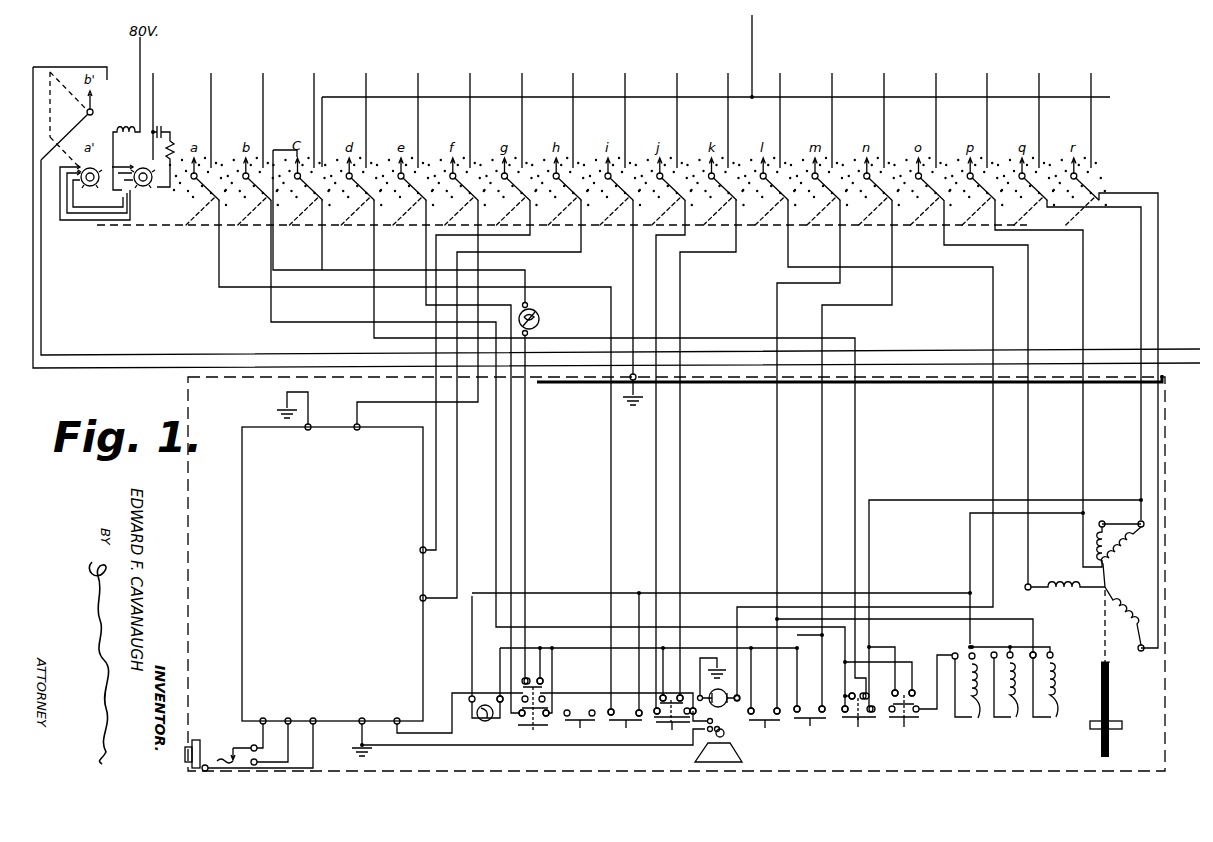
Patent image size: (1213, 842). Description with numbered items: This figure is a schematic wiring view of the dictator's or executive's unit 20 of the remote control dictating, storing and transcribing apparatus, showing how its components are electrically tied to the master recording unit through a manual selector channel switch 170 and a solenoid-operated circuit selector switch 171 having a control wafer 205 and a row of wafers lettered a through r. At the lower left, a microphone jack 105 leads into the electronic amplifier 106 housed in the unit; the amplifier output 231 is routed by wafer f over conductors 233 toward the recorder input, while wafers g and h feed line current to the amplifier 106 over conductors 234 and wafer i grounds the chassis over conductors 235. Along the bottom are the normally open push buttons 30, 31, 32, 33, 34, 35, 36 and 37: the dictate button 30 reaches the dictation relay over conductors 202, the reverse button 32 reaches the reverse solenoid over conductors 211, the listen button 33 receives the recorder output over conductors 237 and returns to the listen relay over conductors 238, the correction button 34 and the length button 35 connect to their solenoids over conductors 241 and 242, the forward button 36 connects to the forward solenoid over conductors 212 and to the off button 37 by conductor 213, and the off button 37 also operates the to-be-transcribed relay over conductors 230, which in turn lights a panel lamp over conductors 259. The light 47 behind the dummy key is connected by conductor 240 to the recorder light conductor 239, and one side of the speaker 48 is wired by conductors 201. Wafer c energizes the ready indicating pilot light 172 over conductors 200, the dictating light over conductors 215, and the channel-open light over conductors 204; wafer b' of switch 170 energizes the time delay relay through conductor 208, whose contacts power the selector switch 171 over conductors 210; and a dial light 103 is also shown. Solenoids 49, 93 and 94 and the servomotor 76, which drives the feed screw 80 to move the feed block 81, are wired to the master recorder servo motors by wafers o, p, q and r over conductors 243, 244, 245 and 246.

The dictator's unit 20 is at (182, 415).
The dictate button 30 is at (533, 711).
The switch-closing push button 31 is at (579, 726).
The reverse button 32 is at (625, 727).
The listen button 33 is at (675, 720).
The correction button 34 is at (764, 726).
The length button 35 is at (810, 724).
The forward button 36 is at (859, 718).
The off button 37 is at (904, 716).
The light 47 is at (723, 707).
The speaker 48 is at (720, 764).
The solenoid 49 is at (966, 699).
The servomotor 76 is at (1116, 590).
The feed screw 80 is at (1112, 694).
The feed block 81 is at (1118, 719).
The solenoid 93 is at (1004, 698).
The solenoid 94 is at (1044, 698).
The dial light 103 is at (494, 734).
The jack 105 is at (208, 742).
The electronic amplifier 106 is at (254, 420).
The manual selector channel switch 170 is at (121, 96).
The solenoid-operated circuit selector switch 171 is at (97, 233).
The ready indicating pilot light 172 is at (533, 311).
The conductors 200 is at (350, 270).
The conductors 201 is at (447, 700).
The conductors 202 is at (535, 556).
The conductors 204 is at (566, 94).
The control wafer 205 is at (137, 195).
The conductor 208 is at (1178, 368).
The conductors 210 is at (156, 119).
The conductors 211 is at (608, 432).
The conductors 212 is at (297, 330).
The conductor 213 is at (905, 666).
The conductors 215 is at (314, 110).
The conductors 230 is at (866, 426).
The output 231 is at (358, 424).
The conductors 233 is at (422, 239).
The conductors 234 is at (563, 60).
The conductors 235 is at (633, 278).
The conductors 237 is at (655, 477).
The conductors 238 is at (680, 296).
The conductor 239 is at (780, 110).
The conductor 240 is at (916, 272).
The conductors 241 is at (762, 537).
The conductors 242 is at (815, 557).
The conductors 243 is at (936, 110).
The conductors 244 is at (987, 110).
The conductors 245 is at (1039, 110).
The conductors 246 is at (1091, 110).
The conductors 259 is at (753, 28).